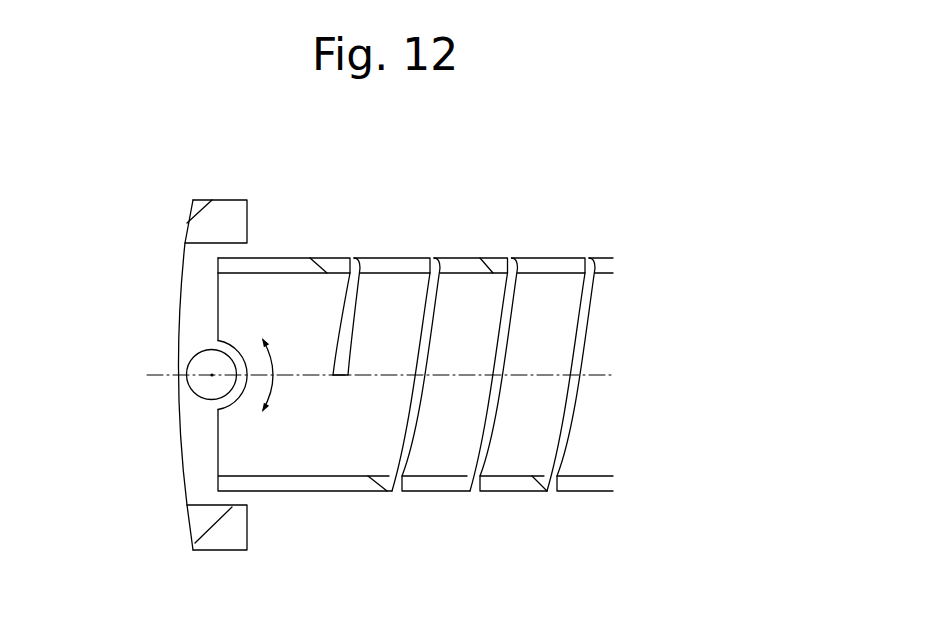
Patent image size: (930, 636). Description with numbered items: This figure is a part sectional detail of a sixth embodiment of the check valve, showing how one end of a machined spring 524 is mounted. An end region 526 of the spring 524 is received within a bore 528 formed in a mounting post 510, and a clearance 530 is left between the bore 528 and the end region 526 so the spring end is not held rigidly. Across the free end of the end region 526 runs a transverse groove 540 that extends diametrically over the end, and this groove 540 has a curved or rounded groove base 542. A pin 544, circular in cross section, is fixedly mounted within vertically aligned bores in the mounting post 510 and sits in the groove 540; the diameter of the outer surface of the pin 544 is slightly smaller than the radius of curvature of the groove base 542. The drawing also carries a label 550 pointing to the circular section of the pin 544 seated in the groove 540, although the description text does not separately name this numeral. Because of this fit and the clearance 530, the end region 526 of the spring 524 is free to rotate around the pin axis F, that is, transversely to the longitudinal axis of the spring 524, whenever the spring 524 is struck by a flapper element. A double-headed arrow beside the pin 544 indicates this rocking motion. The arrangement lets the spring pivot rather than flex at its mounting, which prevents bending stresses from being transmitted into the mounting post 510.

The mounting post 510 is at (223, 552).
The machined spring 524 is at (553, 265).
The end region 526 is at (252, 270).
The bore 528 is at (199, 247).
The clearance 530 is at (225, 246).
The transverse groove 540 is at (229, 410).
The groove base 542 is at (237, 341).
The pin 544 is at (237, 360).
The ball 550 is at (188, 355).
The pin axis F is at (203, 378).